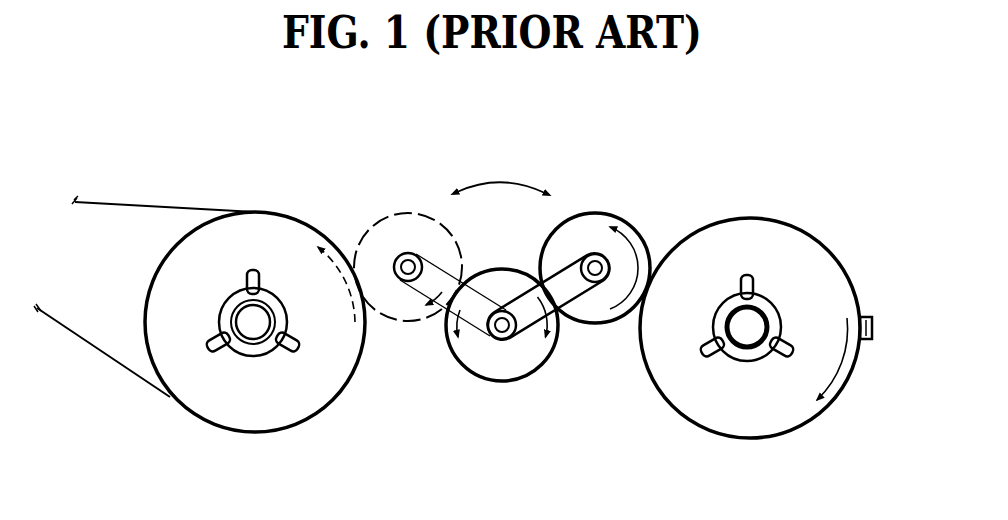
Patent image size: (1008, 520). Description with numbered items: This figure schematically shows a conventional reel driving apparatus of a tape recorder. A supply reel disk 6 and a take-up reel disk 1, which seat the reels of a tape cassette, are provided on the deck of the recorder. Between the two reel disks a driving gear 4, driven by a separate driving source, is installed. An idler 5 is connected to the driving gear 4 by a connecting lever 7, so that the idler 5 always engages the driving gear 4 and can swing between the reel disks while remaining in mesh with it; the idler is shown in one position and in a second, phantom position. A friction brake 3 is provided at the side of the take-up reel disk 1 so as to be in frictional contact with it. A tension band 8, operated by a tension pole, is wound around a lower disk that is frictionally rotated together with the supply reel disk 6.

The take-up reel disk 1 is at (753, 217).
The friction brake 3 is at (866, 316).
The driving gear 4 is at (507, 382).
The idler 5 is at (403, 216).
The supply reel disk 6 is at (263, 212).
The connecting lever 7 is at (562, 297).
The tension band 8 is at (102, 358).